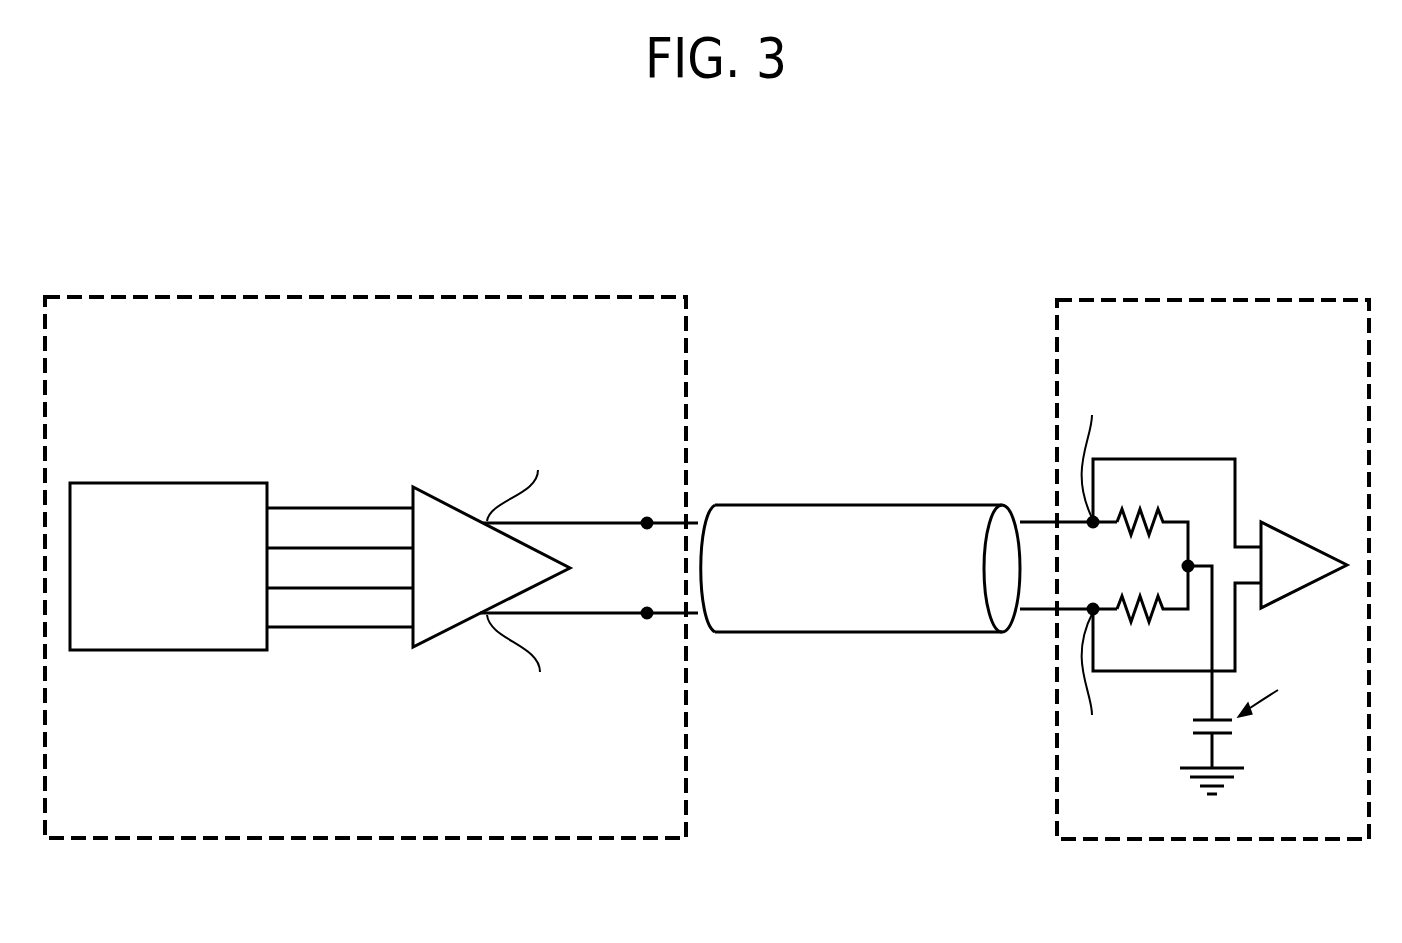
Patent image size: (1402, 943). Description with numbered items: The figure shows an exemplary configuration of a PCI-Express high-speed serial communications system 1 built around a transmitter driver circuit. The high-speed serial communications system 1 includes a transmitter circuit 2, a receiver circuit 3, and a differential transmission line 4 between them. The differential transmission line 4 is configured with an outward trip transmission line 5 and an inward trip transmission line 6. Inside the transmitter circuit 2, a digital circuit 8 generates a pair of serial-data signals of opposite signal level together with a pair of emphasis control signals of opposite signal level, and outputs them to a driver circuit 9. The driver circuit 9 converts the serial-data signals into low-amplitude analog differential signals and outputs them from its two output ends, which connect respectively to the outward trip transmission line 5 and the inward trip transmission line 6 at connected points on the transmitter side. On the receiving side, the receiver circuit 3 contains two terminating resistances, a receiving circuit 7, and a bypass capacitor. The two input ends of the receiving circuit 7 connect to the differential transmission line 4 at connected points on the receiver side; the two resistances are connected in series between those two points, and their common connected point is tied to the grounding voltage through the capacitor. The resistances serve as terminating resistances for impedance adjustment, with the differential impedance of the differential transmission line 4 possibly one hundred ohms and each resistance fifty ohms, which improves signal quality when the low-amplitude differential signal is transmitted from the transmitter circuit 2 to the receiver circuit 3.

The high-speed serial communications system 1 is at (1350, 250).
The transmitter circuit 2 is at (555, 298).
The receiver circuit 3 is at (1280, 300).
The differential transmission line 4 is at (842, 505).
The outward trip transmission line 5 is at (1032, 522).
The inward trip transmission line 6 is at (1032, 610).
The receiving circuit 7 is at (1297, 540).
The digital circuit 8 is at (220, 483).
The driver circuit 9 is at (450, 506).